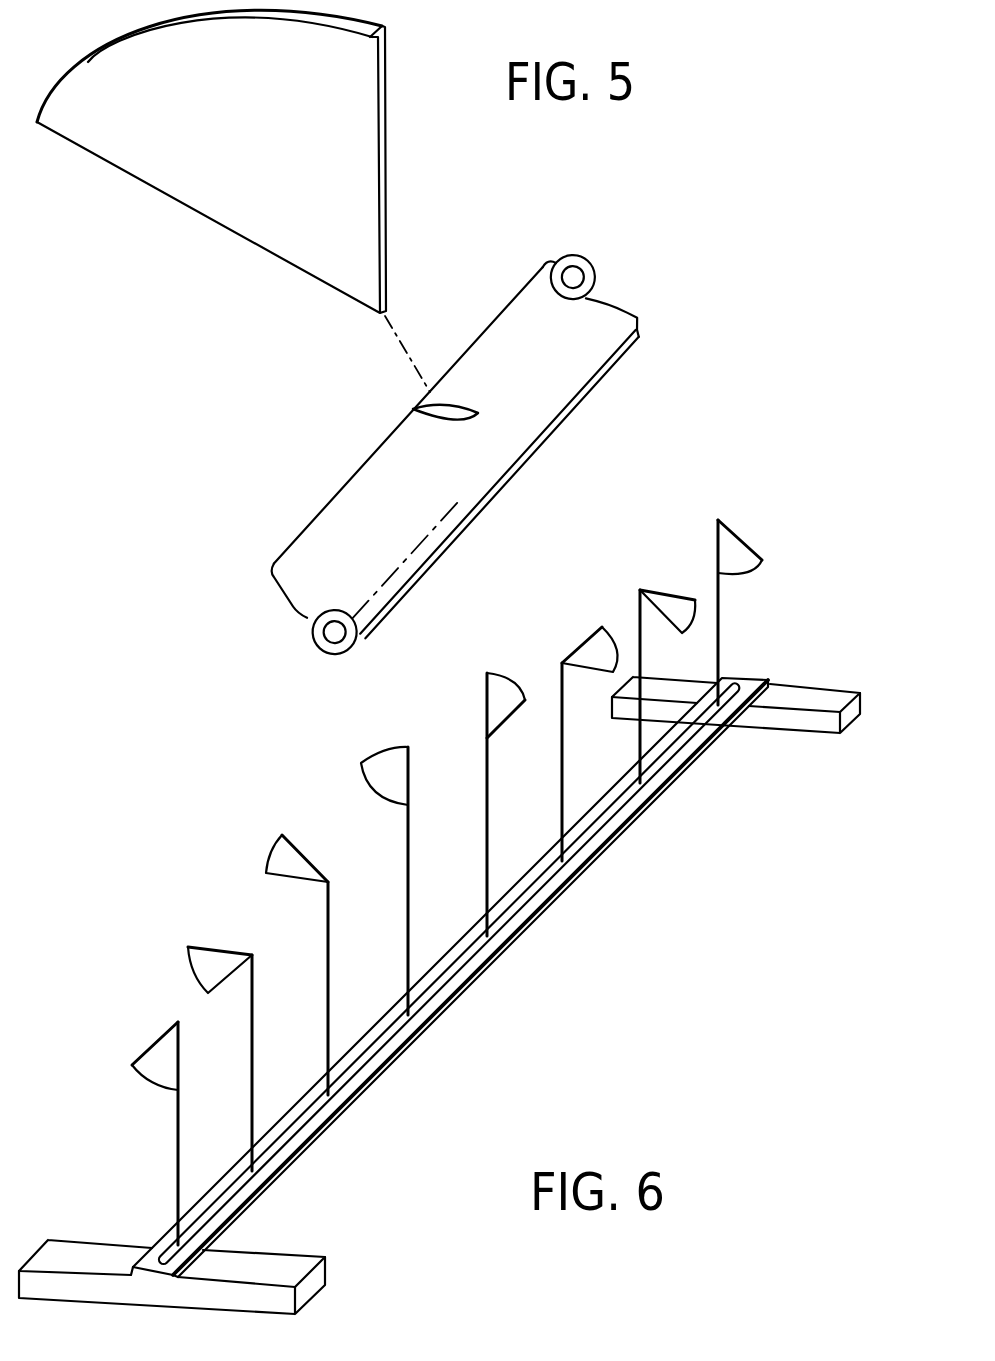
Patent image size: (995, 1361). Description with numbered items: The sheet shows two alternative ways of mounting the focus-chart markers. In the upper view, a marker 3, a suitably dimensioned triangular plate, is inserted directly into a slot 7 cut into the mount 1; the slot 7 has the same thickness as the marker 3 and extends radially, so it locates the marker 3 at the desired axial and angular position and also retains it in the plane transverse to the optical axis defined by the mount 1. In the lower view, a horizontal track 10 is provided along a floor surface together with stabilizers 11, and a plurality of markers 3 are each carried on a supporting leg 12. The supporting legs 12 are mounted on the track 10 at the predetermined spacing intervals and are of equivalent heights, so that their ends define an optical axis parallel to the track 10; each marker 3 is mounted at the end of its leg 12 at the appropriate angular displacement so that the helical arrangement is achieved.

In FIG. 5, the mount 1 is at (330, 532).
In FIG. 5, the marker 3 is at (357, 133).
In FIG. 6, the marker 3 is at (163, 1058).
In FIG. 5, the slot 7 is at (427, 403).
In FIG. 6, the horizontal track 10 is at (360, 1113).
In FIG. 6, the stabilizers 11 is at (298, 1263).
In FIG. 6, the supporting leg 12 is at (178, 1107).